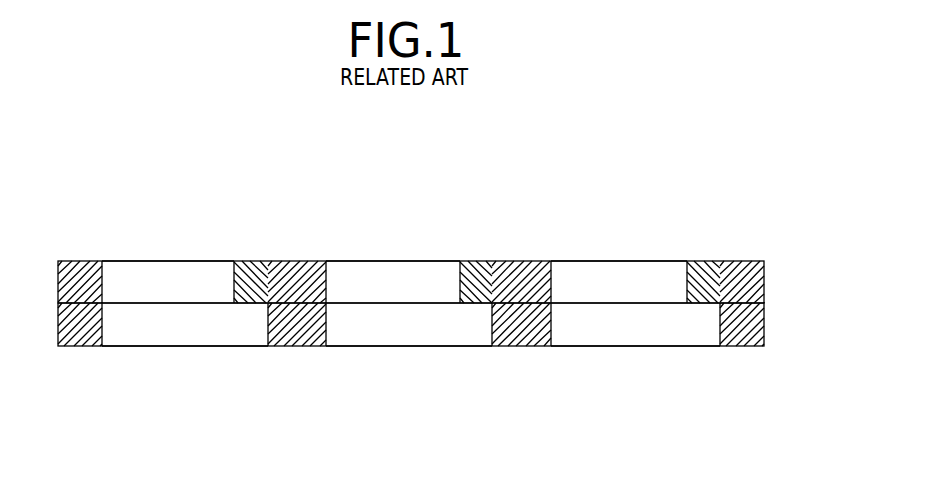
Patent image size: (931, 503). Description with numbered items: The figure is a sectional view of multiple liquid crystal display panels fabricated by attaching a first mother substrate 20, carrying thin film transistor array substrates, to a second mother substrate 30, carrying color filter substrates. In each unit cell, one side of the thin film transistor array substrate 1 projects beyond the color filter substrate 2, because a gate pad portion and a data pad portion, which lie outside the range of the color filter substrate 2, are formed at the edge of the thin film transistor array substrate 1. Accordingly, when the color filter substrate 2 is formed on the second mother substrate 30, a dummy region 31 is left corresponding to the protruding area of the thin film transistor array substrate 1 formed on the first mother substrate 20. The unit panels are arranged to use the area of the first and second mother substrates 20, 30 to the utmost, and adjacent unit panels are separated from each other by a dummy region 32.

The thin film transistor array substrate 1 is at (183, 330).
The color filter substrate 2 is at (178, 277).
The first mother substrate 20 is at (772, 304).
The second mother substrate 30 is at (772, 262).
The dummy region 31 is at (253, 275).
The dummy region 32 is at (78, 273).